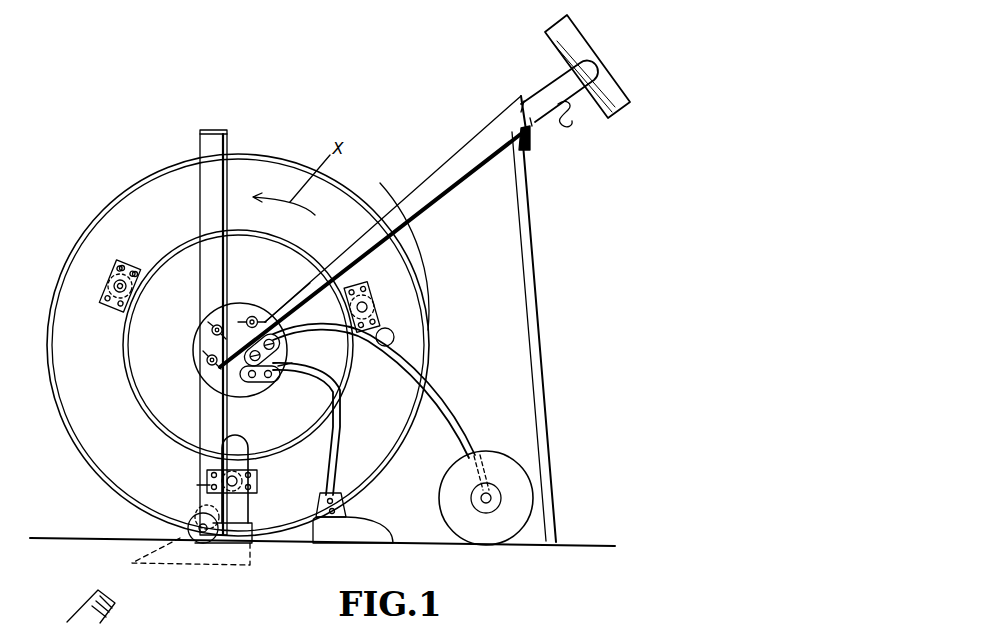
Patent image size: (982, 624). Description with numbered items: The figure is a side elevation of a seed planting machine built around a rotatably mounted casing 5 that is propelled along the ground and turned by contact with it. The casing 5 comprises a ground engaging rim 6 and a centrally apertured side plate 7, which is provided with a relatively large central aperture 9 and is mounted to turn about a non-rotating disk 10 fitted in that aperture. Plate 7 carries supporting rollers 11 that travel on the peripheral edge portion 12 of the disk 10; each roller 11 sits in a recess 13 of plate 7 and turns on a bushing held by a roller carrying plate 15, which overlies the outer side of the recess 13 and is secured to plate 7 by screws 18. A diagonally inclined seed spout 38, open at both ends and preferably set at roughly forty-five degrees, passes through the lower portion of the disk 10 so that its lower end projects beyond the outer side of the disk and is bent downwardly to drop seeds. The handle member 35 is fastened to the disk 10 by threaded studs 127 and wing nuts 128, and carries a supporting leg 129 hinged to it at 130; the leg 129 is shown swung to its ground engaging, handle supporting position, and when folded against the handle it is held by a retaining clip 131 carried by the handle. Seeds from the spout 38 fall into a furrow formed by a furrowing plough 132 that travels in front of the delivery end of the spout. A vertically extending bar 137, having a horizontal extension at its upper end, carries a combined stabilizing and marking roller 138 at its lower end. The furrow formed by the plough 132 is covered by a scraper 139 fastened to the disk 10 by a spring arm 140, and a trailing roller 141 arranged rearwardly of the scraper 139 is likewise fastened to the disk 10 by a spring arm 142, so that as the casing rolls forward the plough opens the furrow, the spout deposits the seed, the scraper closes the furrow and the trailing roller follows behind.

The casing 5 is at (83, 216).
The ground engaging rim 6 is at (48, 358).
The side plate 7 is at (402, 298).
The central aperture 9 is at (114, 378).
The non-rotating disk 10 is at (152, 345).
The supporting roller 11 is at (137, 292).
The peripheral edge portion 12 is at (135, 328).
The recess 13 is at (112, 290).
The roller carrying plate 15 is at (110, 283).
The screws 18 is at (136, 271).
The handle member 35 is at (478, 143).
The seed spout 38 is at (238, 452).
The threaded studs 127 is at (253, 316).
The wing nuts 128 is at (267, 317).
The supporting leg 129 is at (538, 338).
The hinge 130 is at (527, 142).
The retaining clip 131 is at (563, 120).
The furrowing plough 132 is at (185, 540).
The vertically extending bar 137 is at (218, 276).
The combined stabilizing and marking roller 138 is at (190, 517).
The scraper 139 is at (373, 527).
The spring arm 140 is at (346, 424).
The trailing roller 141 is at (503, 458).
The spring arm 142 is at (445, 393).